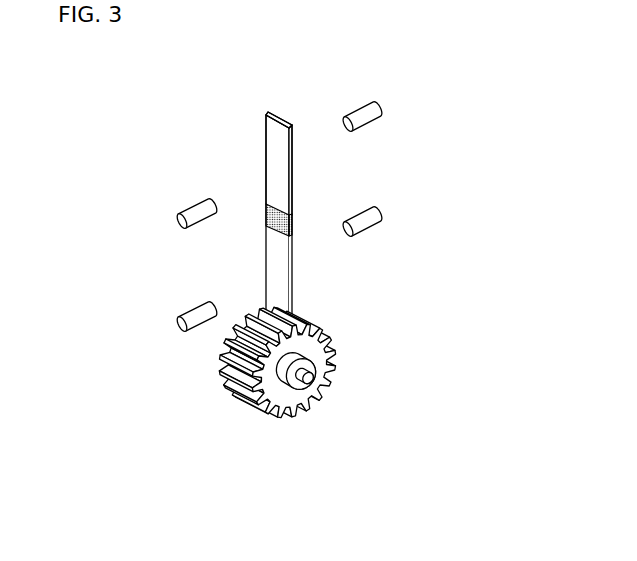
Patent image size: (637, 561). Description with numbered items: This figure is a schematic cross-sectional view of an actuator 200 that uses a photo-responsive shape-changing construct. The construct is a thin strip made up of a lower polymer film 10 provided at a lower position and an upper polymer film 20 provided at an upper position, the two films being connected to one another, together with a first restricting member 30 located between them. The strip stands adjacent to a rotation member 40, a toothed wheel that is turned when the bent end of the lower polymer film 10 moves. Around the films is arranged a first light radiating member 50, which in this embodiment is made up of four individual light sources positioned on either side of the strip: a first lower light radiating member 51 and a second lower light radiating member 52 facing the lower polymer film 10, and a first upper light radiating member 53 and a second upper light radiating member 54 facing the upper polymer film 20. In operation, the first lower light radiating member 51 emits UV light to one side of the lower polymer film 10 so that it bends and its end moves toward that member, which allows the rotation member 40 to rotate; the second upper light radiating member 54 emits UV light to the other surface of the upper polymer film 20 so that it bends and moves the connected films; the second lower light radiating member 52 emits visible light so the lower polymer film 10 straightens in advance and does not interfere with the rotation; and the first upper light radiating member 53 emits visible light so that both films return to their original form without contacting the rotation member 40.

The driving assembly 200 is at (128, 108).
The 1-1 polymer film 10 is at (284, 277).
The 1-2 polymer film 20 is at (272, 147).
The first restricting member 30 is at (290, 220).
The rotation member 40 is at (322, 371).
The first light radiating member 50 is at (121, 202).
The 1-1a light radiating member 51 is at (178, 320).
The 1-1b light radiating member 52 is at (364, 226).
The 1-2a light radiating member 53 is at (178, 213).
The 1-2b light radiating member 54 is at (364, 121).